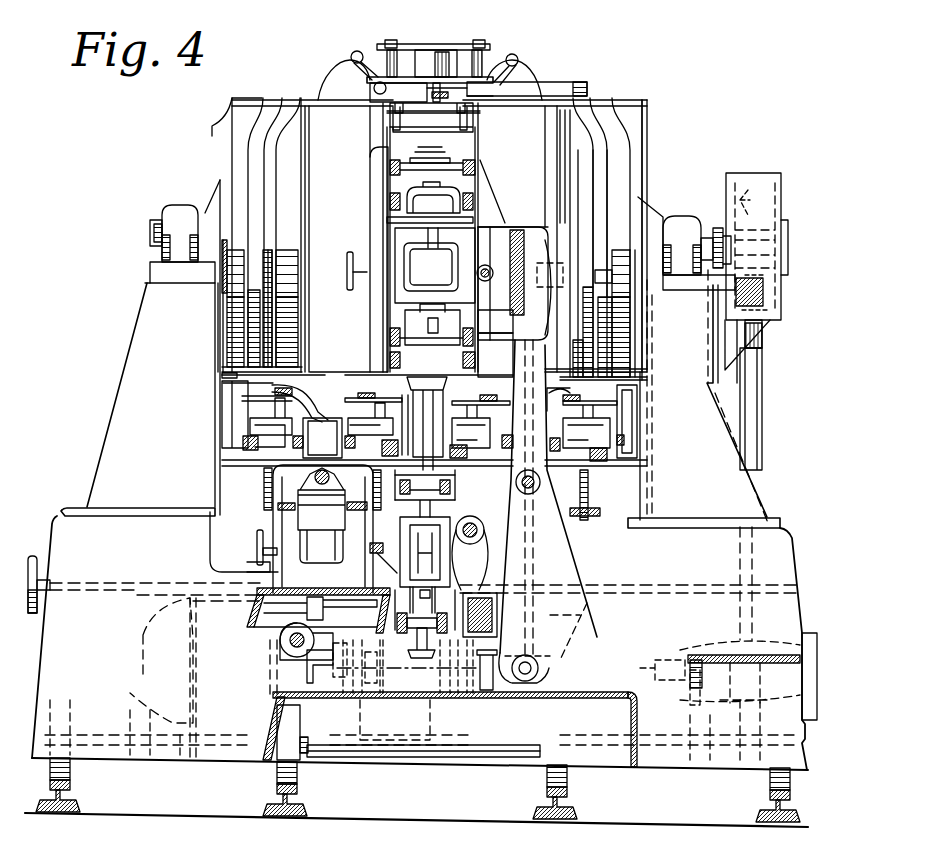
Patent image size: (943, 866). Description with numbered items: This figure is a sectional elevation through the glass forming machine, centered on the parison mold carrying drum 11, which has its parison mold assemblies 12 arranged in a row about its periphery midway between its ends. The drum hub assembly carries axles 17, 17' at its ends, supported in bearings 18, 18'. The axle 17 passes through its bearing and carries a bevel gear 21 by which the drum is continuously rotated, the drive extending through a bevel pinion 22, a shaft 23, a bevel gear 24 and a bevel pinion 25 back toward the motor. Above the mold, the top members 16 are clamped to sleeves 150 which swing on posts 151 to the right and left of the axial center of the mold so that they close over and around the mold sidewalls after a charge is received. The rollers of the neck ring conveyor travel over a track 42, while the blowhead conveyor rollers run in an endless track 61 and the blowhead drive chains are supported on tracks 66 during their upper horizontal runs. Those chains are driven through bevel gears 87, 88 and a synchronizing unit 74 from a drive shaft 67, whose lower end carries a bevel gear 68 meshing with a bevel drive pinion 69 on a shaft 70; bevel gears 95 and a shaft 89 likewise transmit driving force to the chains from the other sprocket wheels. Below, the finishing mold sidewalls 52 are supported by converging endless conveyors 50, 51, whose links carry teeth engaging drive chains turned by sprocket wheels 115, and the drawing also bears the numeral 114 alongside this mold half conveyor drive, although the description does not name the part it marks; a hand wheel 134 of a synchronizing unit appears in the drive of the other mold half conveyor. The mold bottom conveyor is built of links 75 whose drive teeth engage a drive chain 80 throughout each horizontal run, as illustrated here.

The drum 11 is at (278, 121).
The parison mold assemblies 12 is at (435, 48).
The top members 16 is at (422, 46).
The sleeves 150 is at (378, 55).
The posts 151 is at (390, 40).
The axle 17' is at (135, 228).
The bearing 18' is at (180, 225).
The axle 17 is at (712, 221).
The bearing 18 is at (686, 238).
The bevel gear 21 is at (748, 185).
The bevel pinion 22 is at (776, 291).
The shaft 23 is at (760, 388).
The track 42 is at (390, 162).
The endless track 61 is at (390, 194).
The tracks 66 is at (435, 265).
The shaft 89 is at (477, 284).
The bevel gear 87 is at (508, 228).
The synchronizing unit 74 is at (533, 235).
The bevel gears 95 is at (495, 355).
The bevel gear 88 is at (513, 353).
The endless conveyor 50 is at (223, 382).
The mold sidewalls 52 is at (225, 410).
The endless conveyor 51 is at (460, 400).
The sprocket wheels 115 is at (278, 482).
The bolt 114 is at (272, 505).
The hand wheel 134 is at (256, 544).
The drive shaft 67 is at (535, 550).
The bevel gear 68 is at (585, 612).
The shaft 70 is at (526, 683).
The bevel drive pinion 69 is at (577, 702).
The bevel gear 24 is at (695, 642).
The bevel pinion 25 is at (690, 657).
The links 75 is at (400, 632).
The drive chain 80 is at (437, 634).